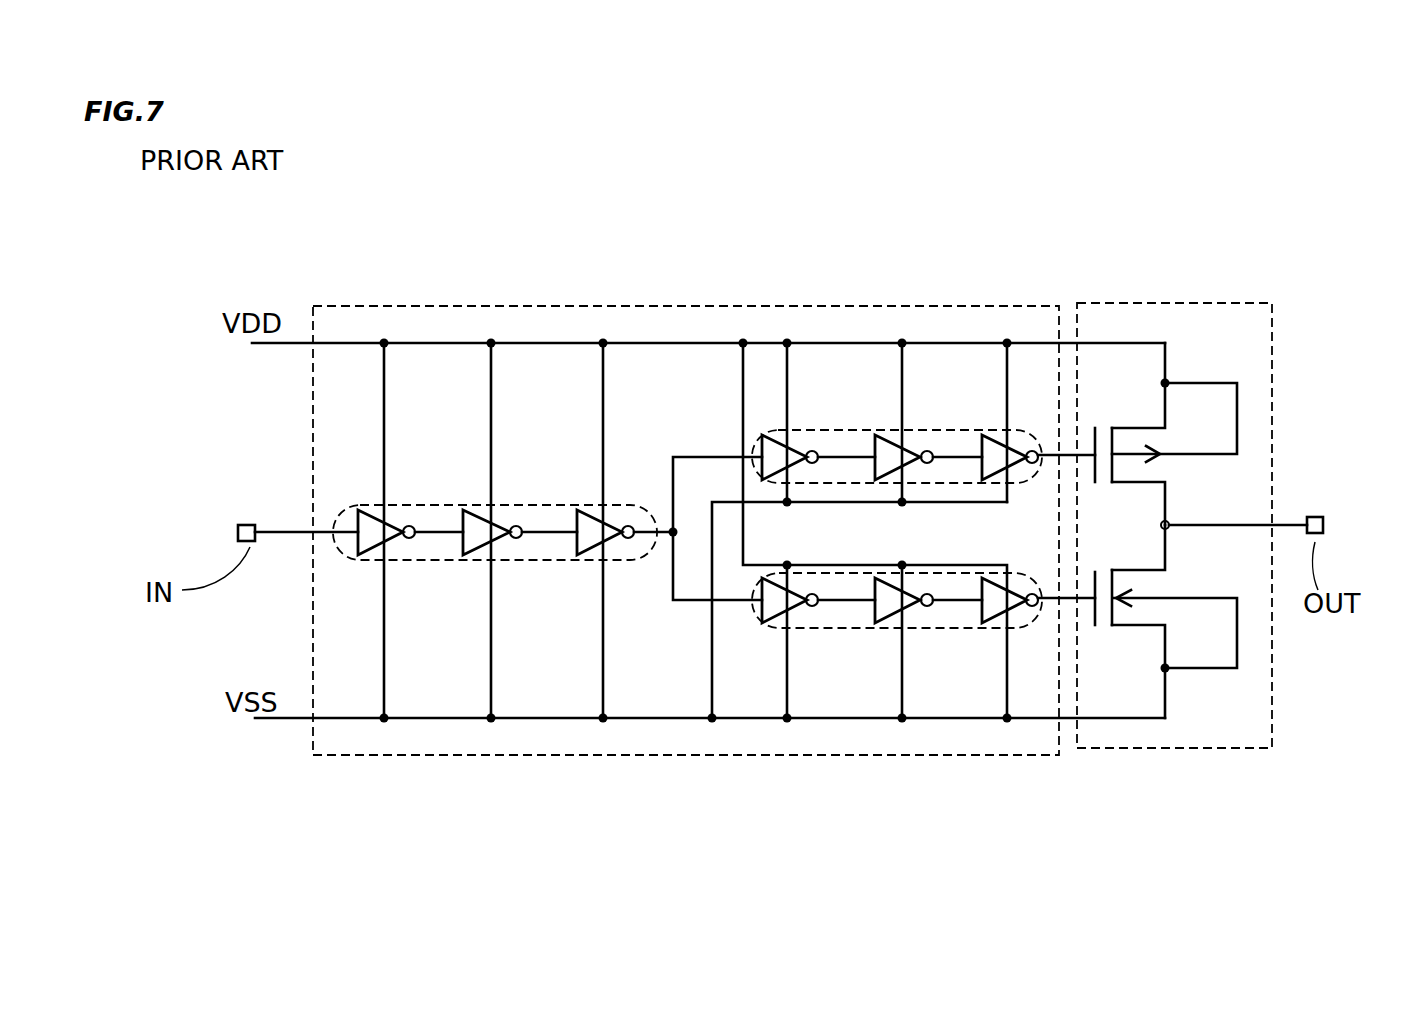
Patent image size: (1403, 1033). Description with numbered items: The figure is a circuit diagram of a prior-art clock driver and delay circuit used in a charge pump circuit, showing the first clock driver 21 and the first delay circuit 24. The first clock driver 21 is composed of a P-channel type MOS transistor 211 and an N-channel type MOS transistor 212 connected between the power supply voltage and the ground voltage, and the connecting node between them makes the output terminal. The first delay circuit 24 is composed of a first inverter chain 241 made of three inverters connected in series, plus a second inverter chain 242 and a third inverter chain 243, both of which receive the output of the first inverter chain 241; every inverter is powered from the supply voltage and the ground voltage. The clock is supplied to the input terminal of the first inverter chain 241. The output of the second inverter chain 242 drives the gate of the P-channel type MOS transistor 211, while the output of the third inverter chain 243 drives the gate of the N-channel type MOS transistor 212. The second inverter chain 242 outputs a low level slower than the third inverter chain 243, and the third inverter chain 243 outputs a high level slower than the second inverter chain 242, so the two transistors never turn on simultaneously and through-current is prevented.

The first clock driver 21 is at (1153, 298).
The first delay circuit 24 is at (538, 303).
The P-channel type MOS transistor 211 is at (1217, 382).
The N-channel type MOS transistor 212 is at (1240, 637).
The first inverter chain 241 is at (510, 562).
The second inverter chain 242 is at (833, 428).
The third inverter chain 243 is at (853, 628).